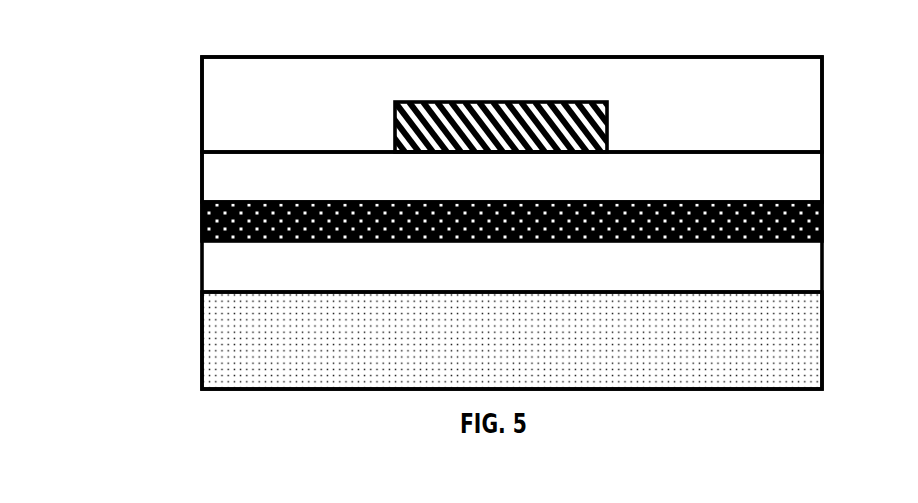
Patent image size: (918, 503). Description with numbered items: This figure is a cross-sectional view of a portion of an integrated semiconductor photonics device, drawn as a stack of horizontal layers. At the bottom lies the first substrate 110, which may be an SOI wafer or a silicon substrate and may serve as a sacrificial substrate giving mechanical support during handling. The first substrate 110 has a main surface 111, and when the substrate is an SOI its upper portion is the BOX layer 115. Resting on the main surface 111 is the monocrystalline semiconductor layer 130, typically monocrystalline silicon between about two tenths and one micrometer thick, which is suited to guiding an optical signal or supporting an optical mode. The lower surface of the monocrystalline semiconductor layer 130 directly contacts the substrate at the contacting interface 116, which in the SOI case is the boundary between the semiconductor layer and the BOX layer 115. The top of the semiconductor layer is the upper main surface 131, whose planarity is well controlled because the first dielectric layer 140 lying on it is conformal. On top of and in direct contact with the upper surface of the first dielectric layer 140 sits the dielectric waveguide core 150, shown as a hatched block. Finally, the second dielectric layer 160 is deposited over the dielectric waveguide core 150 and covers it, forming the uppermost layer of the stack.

The first substrate 110 is at (195, 247).
The main surface 111 is at (155, 261).
The BOX layer 115 is at (202, 289).
The contacting interface 116 is at (155, 261).
The monocrystalline semiconductor layer 130 is at (202, 232).
The upper main surface 131 is at (161, 170).
The first dielectric layer 140 is at (202, 184).
The dielectric waveguide core 150 is at (395, 126).
The second dielectric layer 160 is at (202, 86).